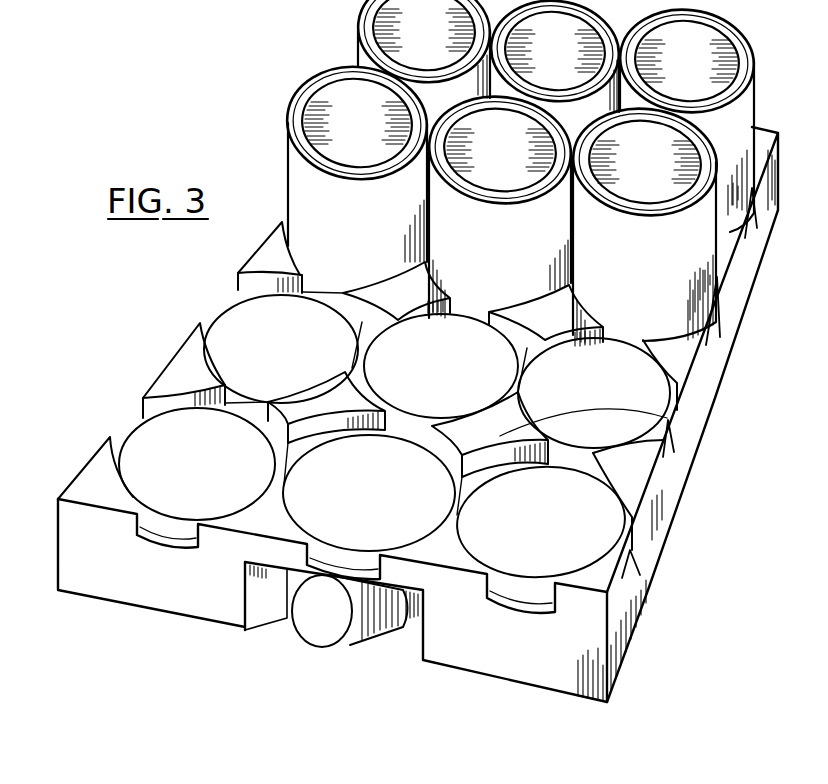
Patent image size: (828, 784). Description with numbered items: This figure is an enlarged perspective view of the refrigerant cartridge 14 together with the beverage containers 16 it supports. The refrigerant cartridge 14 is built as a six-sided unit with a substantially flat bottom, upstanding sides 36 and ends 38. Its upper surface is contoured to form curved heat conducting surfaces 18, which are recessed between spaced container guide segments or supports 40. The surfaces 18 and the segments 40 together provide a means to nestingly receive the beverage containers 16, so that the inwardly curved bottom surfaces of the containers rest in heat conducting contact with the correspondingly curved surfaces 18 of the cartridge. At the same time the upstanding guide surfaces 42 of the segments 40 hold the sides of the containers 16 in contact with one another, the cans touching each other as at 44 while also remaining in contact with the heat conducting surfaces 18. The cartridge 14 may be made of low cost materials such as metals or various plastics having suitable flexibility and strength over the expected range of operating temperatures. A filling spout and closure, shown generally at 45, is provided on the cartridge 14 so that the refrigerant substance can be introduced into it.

The refrigerant cartridge 14 is at (399, 427).
The beverage containers 16 is at (390, 40).
The curved heat conducting surfaces 18 is at (175, 526).
The upstanding sides 36 is at (631, 614).
The ends 38 is at (514, 665).
The container guide segments 40 is at (193, 346).
The upstanding guide surfaces 42 is at (418, 474).
The contact point between cans 44 is at (561, 237).
The filling spout and closure 45 is at (328, 642).